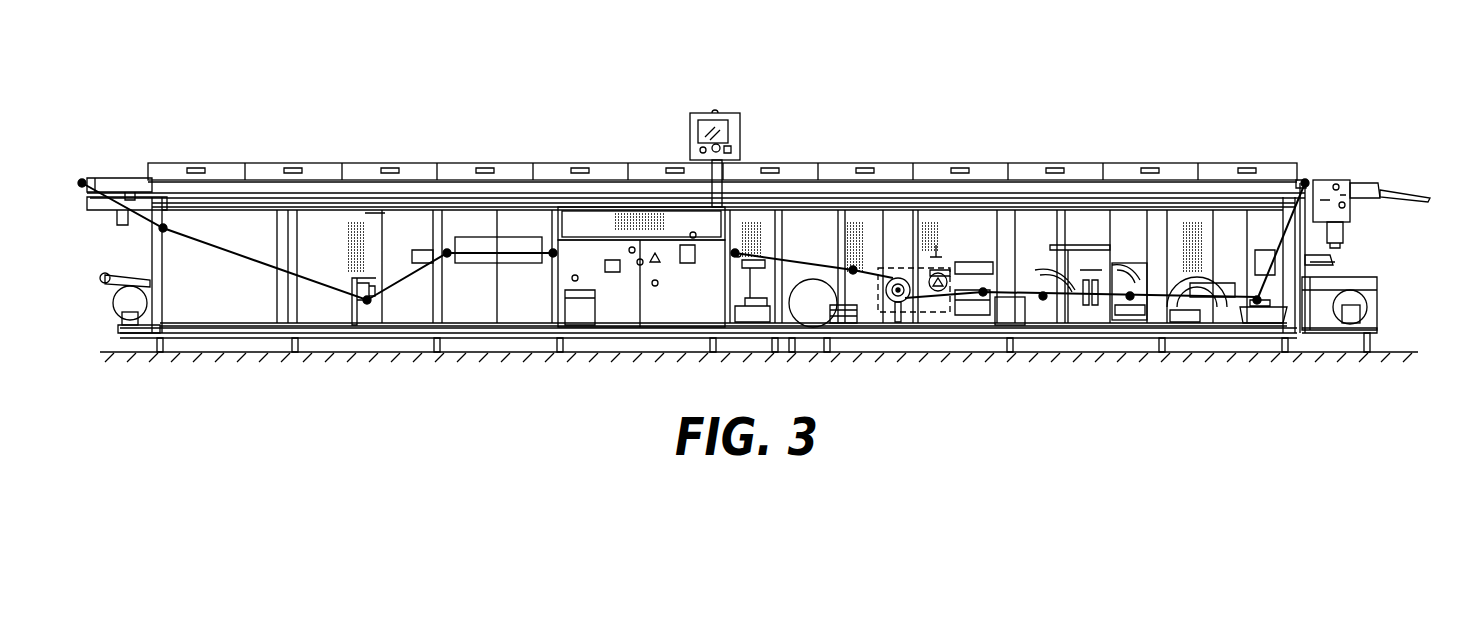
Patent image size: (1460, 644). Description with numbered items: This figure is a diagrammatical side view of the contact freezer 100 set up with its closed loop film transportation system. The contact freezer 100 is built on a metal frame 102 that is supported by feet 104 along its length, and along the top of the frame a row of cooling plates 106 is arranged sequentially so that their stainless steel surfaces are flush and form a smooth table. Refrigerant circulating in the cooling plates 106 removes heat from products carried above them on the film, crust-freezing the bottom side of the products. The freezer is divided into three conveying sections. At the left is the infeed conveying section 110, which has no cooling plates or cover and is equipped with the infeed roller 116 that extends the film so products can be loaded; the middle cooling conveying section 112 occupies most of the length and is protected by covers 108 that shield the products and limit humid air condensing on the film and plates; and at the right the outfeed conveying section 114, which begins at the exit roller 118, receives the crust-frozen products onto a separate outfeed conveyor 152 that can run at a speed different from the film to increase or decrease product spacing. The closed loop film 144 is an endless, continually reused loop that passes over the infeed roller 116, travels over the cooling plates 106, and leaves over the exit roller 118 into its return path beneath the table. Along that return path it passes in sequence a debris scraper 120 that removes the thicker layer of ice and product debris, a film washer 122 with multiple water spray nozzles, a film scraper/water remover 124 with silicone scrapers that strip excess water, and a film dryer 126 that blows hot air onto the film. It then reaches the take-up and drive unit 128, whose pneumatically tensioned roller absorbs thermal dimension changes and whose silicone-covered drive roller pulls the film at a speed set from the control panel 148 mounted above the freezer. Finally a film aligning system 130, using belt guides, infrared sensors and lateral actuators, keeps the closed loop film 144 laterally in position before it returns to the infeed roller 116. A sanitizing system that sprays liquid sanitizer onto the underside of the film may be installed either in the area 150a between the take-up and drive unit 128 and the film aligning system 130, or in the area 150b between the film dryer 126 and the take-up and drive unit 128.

The contact freezer 100 is at (904, 80).
The metal frame 102 is at (233, 340).
The feet 104 is at (162, 351).
The cooling plates 106 is at (365, 190).
The covers 108 is at (485, 165).
The infeed conveying section 110 is at (115, 158).
The cooling conveying section 112 is at (283, 155).
The outfeed conveying section 114 is at (1364, 158).
The infeed roller 116 is at (80, 178).
The exit roller 118 is at (1312, 180).
The debris scraper 120 is at (1263, 314).
The film washer 122 is at (1198, 317).
The film scraper/water remover 124 is at (1130, 316).
The film dryer 126 is at (1093, 314).
The take-up and drive unit 128 is at (922, 314).
The film aligning system 130 is at (367, 306).
The closed loop film 144 is at (183, 262).
The control panel 148 is at (733, 112).
The sanitizing system area 150a is at (503, 266).
The sanitizing system area 150b is at (1018, 314).
The outfeed conveyor 152 is at (1405, 195).